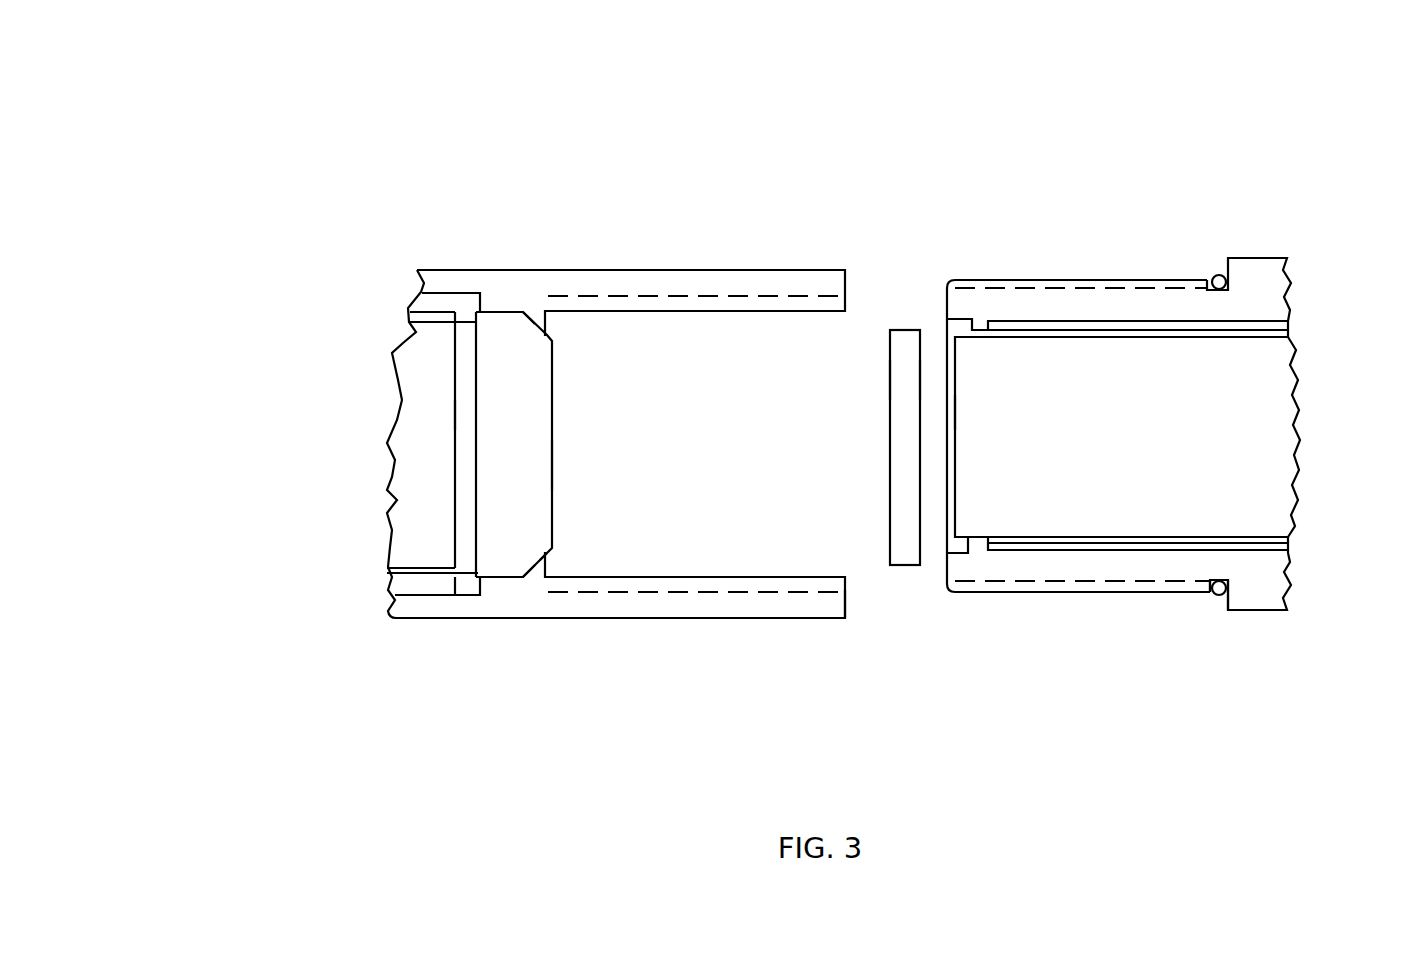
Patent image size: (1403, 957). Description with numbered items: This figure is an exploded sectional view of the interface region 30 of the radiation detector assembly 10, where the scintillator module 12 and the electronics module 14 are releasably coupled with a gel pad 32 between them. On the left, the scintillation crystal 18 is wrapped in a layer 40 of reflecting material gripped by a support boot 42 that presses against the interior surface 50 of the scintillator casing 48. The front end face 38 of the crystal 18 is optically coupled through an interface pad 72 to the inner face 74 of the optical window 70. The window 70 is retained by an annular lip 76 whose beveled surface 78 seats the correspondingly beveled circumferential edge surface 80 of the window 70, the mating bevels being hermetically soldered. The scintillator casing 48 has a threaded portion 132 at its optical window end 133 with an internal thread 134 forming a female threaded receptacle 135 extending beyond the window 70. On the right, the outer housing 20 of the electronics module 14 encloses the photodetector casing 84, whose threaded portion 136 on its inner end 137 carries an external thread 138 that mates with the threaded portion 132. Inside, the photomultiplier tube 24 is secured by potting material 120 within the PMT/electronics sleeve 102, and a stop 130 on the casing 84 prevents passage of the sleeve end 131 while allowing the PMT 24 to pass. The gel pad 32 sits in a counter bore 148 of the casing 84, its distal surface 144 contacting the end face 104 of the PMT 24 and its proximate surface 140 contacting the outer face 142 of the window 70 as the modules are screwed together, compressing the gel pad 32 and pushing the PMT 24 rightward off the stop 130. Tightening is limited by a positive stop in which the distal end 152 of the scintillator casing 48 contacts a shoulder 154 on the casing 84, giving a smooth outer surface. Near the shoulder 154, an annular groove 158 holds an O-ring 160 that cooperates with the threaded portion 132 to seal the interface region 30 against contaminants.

The radiation detector assembly 10 is at (178, 103).
The scintillator module 12 is at (328, 210).
The electronics module 14 is at (1320, 192).
The scintillation crystal 18 is at (408, 478).
The outer housing 20 is at (1122, 622).
The photomultiplier tube 24 is at (1170, 448).
The interface region 30 is at (762, 62).
The gel pad 32 is at (900, 330).
The end face 38 is at (455, 354).
The layer of reflecting material 40 is at (412, 567).
The support boot 42 is at (422, 585).
The scintillator casing 48 is at (470, 268).
The interior surface 50 is at (456, 590).
The optical window 70 is at (535, 375).
The interface pad 72 is at (455, 413).
The inner face 74 is at (472, 440).
The annular lip 76 is at (542, 566).
The beveled surface 78 is at (535, 564).
The beveled circumferential edge surface 80 is at (530, 312).
The photodetector casing 84 is at (1248, 228).
The PMT/electronics sleeve 102 is at (1113, 332).
The end face of PMT 104 is at (955, 412).
The potting material 120 is at (1263, 333).
The stop 130 is at (975, 535).
The end of PMT/electronics sleeve 131 is at (977, 325).
The threaded portion 132 is at (667, 257).
The optical window end 133 is at (625, 752).
The internal thread 134 is at (637, 298).
The female threaded receptacle 135 is at (673, 448).
The threaded portion 136 is at (978, 245).
The inner end 137 is at (992, 640).
The external thread 138 is at (1118, 278).
The proximate surface 140 is at (890, 378).
The outer face 142 is at (555, 462).
The distal surface 144 is at (920, 372).
The counter bore 148 is at (938, 486).
The distal end 152 is at (845, 608).
The shoulder 154 is at (1228, 602).
The annular groove 158 is at (1218, 583).
The O-ring 160 is at (1213, 590).